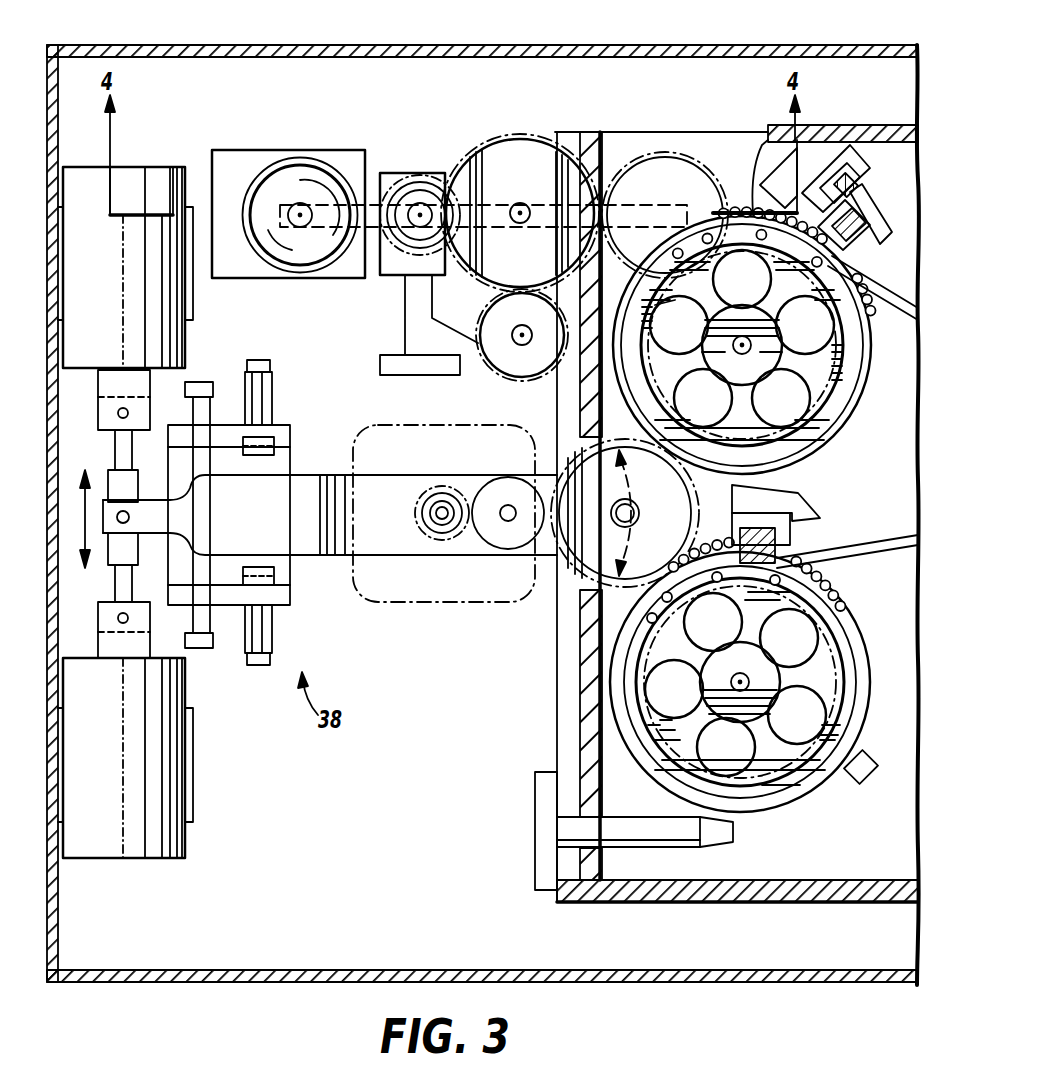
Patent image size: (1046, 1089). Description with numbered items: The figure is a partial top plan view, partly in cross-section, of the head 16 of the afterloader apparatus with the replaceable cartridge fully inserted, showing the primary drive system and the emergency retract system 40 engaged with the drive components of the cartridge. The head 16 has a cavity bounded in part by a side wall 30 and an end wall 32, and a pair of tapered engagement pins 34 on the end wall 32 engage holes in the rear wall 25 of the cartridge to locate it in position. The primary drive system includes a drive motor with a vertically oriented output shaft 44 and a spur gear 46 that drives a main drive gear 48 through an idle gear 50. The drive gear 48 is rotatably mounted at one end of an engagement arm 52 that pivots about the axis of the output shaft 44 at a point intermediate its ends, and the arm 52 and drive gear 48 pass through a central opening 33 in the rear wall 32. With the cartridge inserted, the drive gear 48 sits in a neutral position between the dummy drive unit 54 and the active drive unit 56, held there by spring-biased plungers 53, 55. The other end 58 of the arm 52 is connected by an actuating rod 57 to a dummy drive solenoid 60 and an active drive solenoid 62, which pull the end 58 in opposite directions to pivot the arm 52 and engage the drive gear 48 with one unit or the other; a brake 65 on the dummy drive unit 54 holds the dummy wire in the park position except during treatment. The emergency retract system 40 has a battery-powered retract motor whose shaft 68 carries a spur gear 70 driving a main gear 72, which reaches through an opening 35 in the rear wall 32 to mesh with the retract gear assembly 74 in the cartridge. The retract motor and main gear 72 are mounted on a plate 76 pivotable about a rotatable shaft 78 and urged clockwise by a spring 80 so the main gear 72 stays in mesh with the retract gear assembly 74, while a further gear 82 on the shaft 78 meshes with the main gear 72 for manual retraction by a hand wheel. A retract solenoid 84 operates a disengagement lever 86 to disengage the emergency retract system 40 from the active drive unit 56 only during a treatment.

The head 16 is at (228, 982).
The rear wall 25 is at (594, 806).
The side wall 30 is at (893, 127).
The end wall 32 is at (578, 690).
The central opening 33 is at (570, 605).
The tapered engagement pins 34 is at (655, 828).
The opening 35 is at (606, 160).
The emergency retract system 40 is at (412, 106).
The output shaft 44 is at (442, 525).
The spur gear 46 is at (415, 513).
The main drive gear 48 is at (590, 570).
The idle gear 50 is at (505, 535).
The engagement arm 52 is at (310, 528).
The spring-biased plunger 53 is at (262, 390).
The dummy drive unit 54 is at (818, 806).
The spring-biased plunger 55 is at (262, 628).
The active drive unit 56 is at (845, 450).
The actuating rod 57 is at (118, 485).
The other end 58 is at (150, 513).
The dummy drive solenoid 60 is at (160, 315).
The active drive solenoid 62 is at (155, 738).
The brake 65 is at (868, 765).
The shaft 68 is at (425, 203).
The spur gear 70 is at (402, 185).
The main gear 72 is at (510, 155).
The retract gear assembly 74 is at (665, 165).
The plate 76 is at (470, 305).
The rotatable shaft 78 is at (512, 345).
The spring 80 is at (405, 326).
The further gear 82 is at (530, 355).
The retract solenoid 84 is at (290, 170).
The disengagement lever 86 is at (368, 262).